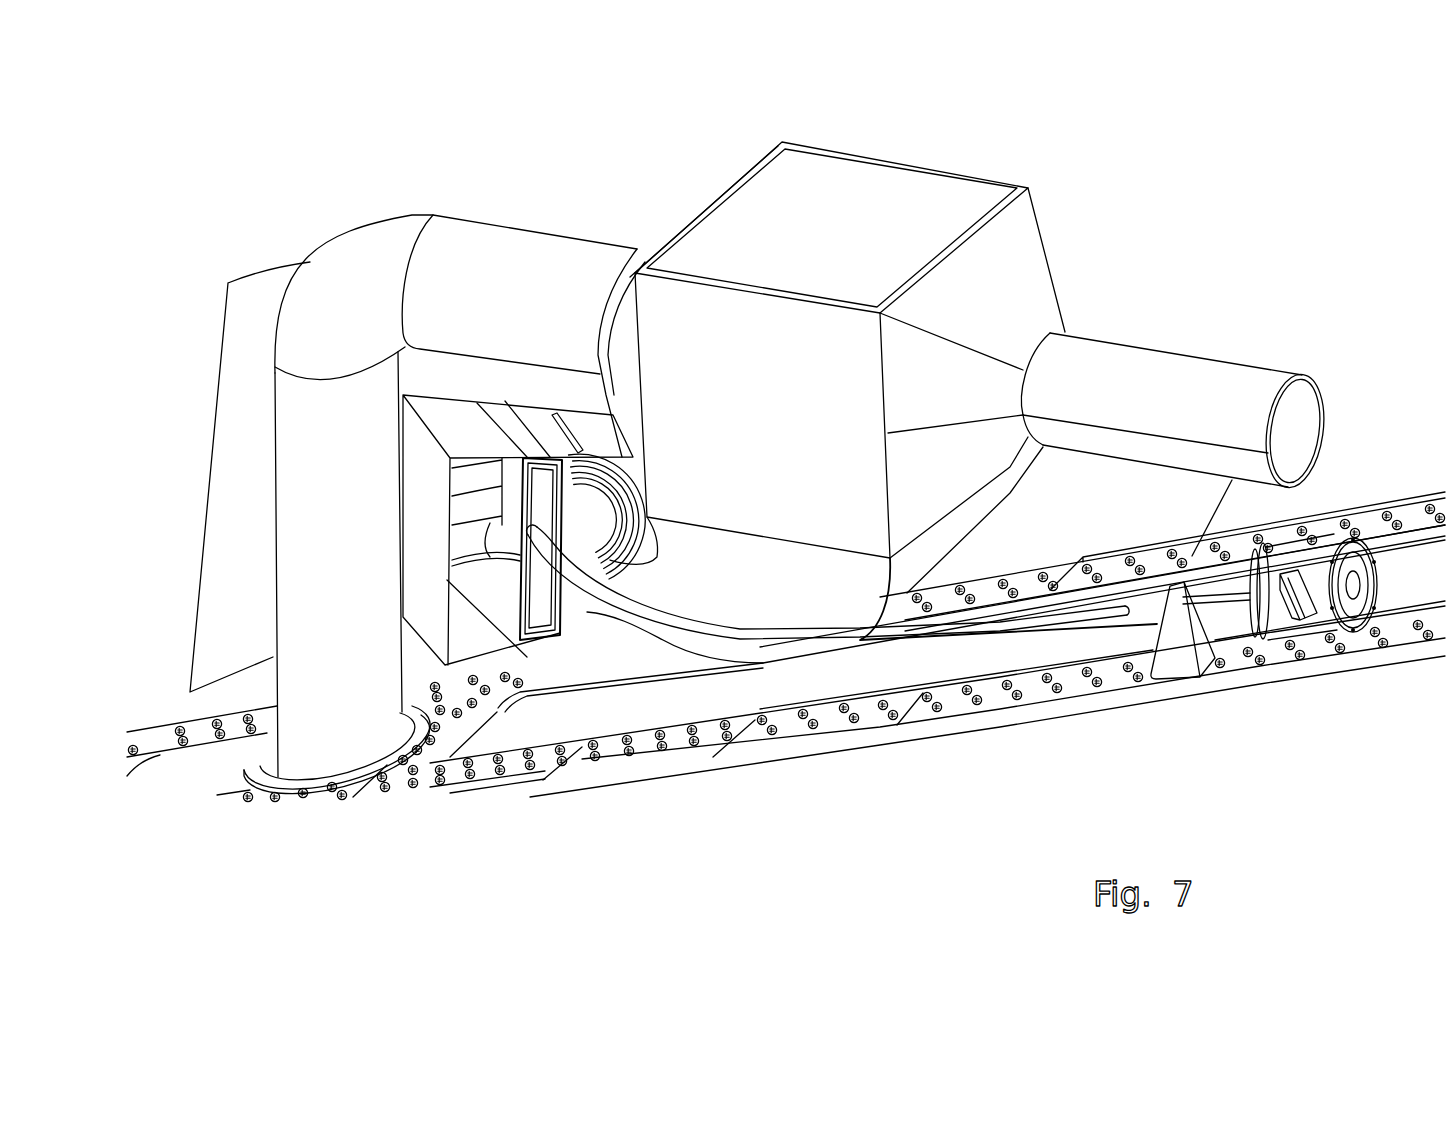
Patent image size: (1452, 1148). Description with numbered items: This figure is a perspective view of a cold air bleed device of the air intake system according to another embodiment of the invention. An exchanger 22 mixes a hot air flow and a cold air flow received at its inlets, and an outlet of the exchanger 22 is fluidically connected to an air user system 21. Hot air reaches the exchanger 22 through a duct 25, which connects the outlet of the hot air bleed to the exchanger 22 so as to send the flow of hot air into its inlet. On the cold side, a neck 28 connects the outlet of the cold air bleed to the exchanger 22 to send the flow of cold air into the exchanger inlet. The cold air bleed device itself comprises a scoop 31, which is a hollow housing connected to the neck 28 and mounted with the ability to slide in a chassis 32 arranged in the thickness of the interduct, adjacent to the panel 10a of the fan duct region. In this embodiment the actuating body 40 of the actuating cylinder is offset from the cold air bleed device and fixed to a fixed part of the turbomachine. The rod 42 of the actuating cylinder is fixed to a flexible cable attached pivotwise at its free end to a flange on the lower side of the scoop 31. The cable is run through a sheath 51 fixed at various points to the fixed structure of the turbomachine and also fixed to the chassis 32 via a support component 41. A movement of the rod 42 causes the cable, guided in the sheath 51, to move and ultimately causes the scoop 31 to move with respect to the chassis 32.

The base panel 10a is at (236, 454).
The air user system 21 is at (1295, 437).
The exchanger 22 is at (840, 183).
The duct 25 is at (467, 262).
The neck 28 is at (783, 657).
The scoop 31 is at (478, 575).
The chassis 32 is at (425, 620).
The actuating body 40 is at (1358, 633).
The support component 41 is at (552, 497).
The rod 42 is at (1243, 618).
The sheath 51 is at (980, 630).